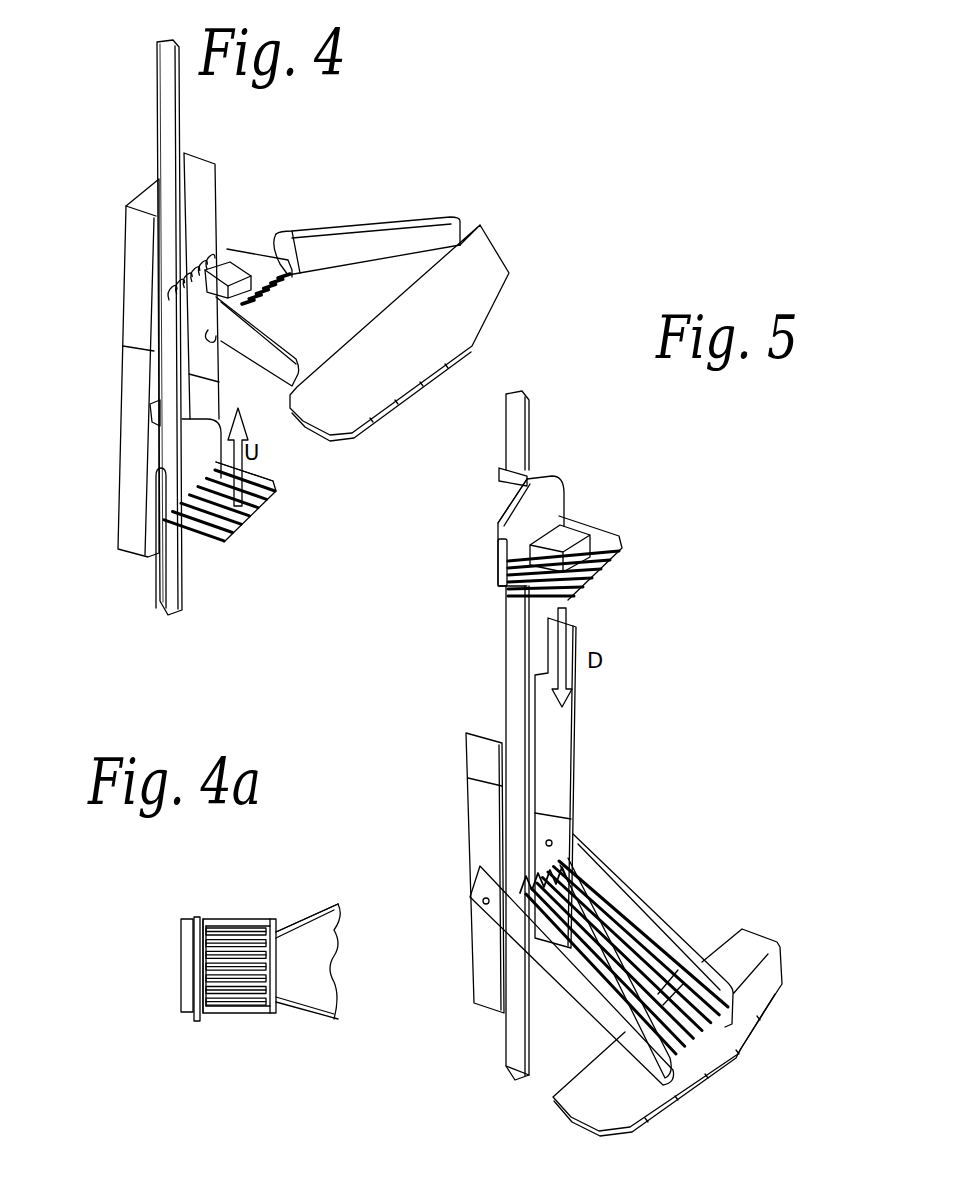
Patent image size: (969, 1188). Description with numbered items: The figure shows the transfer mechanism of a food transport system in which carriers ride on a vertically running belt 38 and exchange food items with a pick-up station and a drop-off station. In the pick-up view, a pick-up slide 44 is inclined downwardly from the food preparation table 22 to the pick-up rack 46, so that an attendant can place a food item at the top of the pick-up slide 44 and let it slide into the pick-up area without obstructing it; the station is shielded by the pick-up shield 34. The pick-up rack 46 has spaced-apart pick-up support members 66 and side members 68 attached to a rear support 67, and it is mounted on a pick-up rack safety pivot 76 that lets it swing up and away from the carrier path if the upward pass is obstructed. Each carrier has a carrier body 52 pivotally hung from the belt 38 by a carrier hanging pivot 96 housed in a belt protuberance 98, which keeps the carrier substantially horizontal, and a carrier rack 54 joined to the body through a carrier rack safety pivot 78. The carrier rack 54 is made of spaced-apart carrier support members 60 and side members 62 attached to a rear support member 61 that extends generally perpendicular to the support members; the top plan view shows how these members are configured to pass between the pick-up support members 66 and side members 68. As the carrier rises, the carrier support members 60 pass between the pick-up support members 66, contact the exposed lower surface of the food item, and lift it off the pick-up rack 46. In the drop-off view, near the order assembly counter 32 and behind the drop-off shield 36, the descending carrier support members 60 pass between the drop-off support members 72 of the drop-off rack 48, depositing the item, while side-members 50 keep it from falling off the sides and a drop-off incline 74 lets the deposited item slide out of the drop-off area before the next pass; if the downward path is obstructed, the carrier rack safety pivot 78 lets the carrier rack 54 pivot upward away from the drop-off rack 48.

In FIG. 4, the food preparation table 22 is at (449, 307).
In FIG. 5, the order assembly counter 32 is at (747, 966).
In FIG. 4, the pick-up shield 34 is at (135, 455).
In FIG. 5, the drop-off shield 36 is at (470, 853).
In FIG. 4, the belt 38 is at (160, 123).
In FIG. 5, the belt 38 is at (503, 634).
In FIG. 4, the pick-up slide 44 is at (422, 251).
In FIG. 4a, the pick-up slide 44 is at (305, 988).
In FIG. 4, the pick-up rack 46 is at (339, 247).
In FIG. 4a, the pick-up rack 46 is at (285, 958).
In FIG. 5, the drop-off rack 48 is at (588, 921).
In FIG. 5, the side-members 50 is at (567, 987).
In FIG. 4, the carrier body 52 is at (175, 445).
In FIG. 4a, the carrier body 52 is at (176, 936).
In FIG. 5, the carrier body 52 is at (531, 490).
In FIG. 4, the carrier rack 54 is at (254, 553).
In FIG. 4a, the carrier rack 54 is at (188, 913).
In FIG. 5, the carrier rack 54 is at (601, 560).
In FIG. 4, the carrier support members 60 is at (262, 497).
In FIG. 4a, the carrier support members 60 is at (234, 966).
In FIG. 5, the carrier support members 60 is at (588, 572).
In FIG. 4a, the rear support member 61 is at (191, 966).
In FIG. 4, the side members 62 is at (269, 473).
In FIG. 4a, the side members 62 is at (205, 915).
In FIG. 4, the pick-up support members 66 is at (211, 245).
In FIG. 4a, the rear support 67 is at (271, 941).
In FIG. 4a, the side members 68 is at (248, 921).
In FIG. 5, the drop-off support members 72 is at (525, 901).
In FIG. 5, the drop-off incline 74 is at (664, 908).
In FIG. 4, the pick-up rack safety pivot 76 is at (285, 258).
In FIG. 4, the carrier rack safety pivot 78 is at (149, 581).
In FIG. 5, the carrier rack safety pivot 78 is at (502, 560).
In FIG. 4, the carrier hanging pivot 96 is at (174, 421).
In FIG. 5, the carrier hanging pivot 96 is at (522, 471).
In FIG. 4, the belt protuberance 98 is at (152, 416).
In FIG. 5, the belt protuberance 98 is at (497, 467).